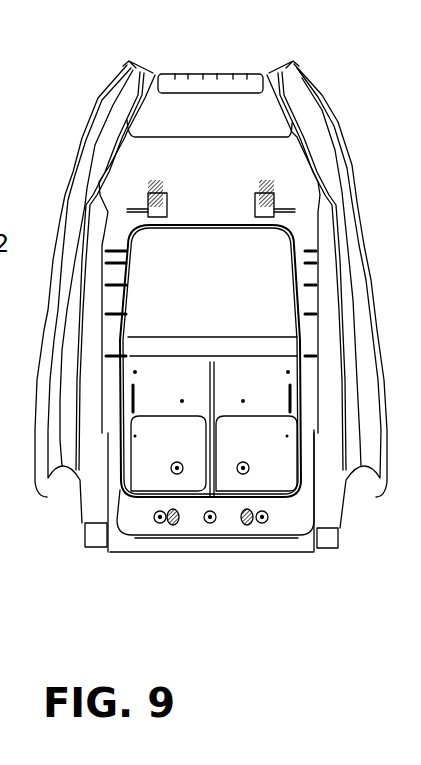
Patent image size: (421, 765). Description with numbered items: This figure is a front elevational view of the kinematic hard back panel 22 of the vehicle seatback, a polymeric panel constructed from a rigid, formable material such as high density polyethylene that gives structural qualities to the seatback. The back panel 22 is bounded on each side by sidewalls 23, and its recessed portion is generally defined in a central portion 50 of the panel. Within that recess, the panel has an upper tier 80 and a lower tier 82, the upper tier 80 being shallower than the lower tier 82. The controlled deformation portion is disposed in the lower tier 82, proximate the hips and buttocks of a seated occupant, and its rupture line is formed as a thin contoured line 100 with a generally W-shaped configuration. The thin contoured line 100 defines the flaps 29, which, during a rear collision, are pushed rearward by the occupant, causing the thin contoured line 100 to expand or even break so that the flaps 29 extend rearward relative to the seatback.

The hard back panel 22 is at (225, 118).
The sidewalls 23 is at (53, 458).
The flaps 29 is at (185, 453).
The central portion 50 is at (145, 243).
The upper tier 80 is at (260, 257).
The lower tier 82 is at (240, 383).
The thin contoured line 100 is at (147, 500).